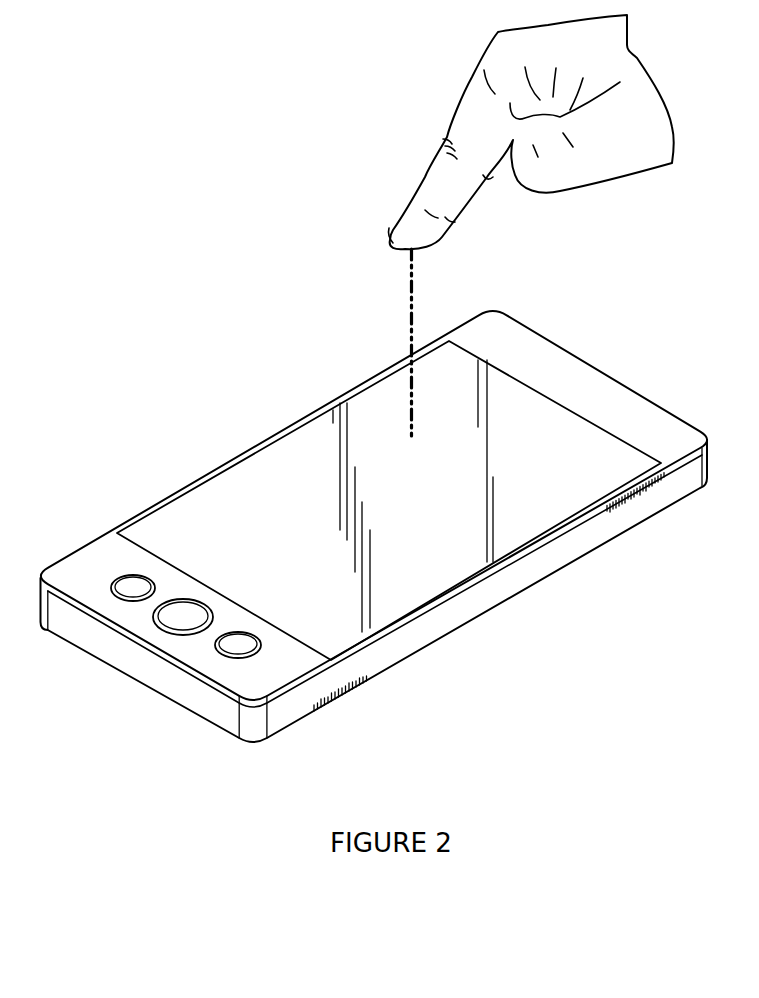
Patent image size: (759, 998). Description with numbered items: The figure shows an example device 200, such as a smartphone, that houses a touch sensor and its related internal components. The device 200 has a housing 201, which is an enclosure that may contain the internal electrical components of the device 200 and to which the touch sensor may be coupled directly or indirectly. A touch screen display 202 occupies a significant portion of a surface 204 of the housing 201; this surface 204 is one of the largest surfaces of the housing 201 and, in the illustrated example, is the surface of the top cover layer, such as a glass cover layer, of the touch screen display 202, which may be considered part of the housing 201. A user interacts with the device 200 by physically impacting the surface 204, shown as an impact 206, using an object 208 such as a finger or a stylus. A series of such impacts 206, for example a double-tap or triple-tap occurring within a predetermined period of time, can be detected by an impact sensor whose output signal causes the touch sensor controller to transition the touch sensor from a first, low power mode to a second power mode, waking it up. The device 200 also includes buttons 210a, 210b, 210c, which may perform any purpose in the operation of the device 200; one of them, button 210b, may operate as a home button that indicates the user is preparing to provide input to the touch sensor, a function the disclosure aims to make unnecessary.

The device 200 is at (369, 526).
The housing 201 is at (97, 557).
The touch screen display 202 is at (262, 468).
The surface 204 is at (560, 500).
The impact 206 is at (410, 293).
The object 208 is at (428, 167).
The button 210a is at (137, 582).
The button 210b is at (183, 610).
The button 210c is at (237, 643).